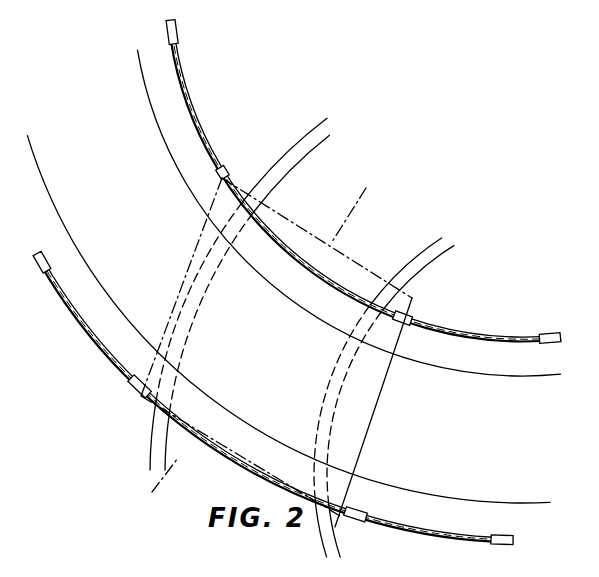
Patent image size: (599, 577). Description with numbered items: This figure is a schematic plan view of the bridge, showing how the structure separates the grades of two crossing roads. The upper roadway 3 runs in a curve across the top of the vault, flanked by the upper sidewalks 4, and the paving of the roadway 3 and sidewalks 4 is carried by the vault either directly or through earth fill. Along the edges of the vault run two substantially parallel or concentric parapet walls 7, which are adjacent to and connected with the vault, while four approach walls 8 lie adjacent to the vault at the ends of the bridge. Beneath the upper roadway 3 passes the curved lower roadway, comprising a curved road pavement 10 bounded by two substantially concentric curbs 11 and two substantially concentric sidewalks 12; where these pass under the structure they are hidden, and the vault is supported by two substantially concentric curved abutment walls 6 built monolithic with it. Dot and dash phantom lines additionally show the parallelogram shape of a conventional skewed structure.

The upper roadway 3 is at (472, 447).
The upper sidewalks 4 is at (502, 368).
The abutment walls 6 is at (207, 242).
The parapet walls 7 is at (300, 258).
The approach walls 8 is at (194, 98).
The curved road pavement 10 is at (382, 217).
The curbs 11 is at (279, 180).
The sidewalks 12 is at (318, 134).